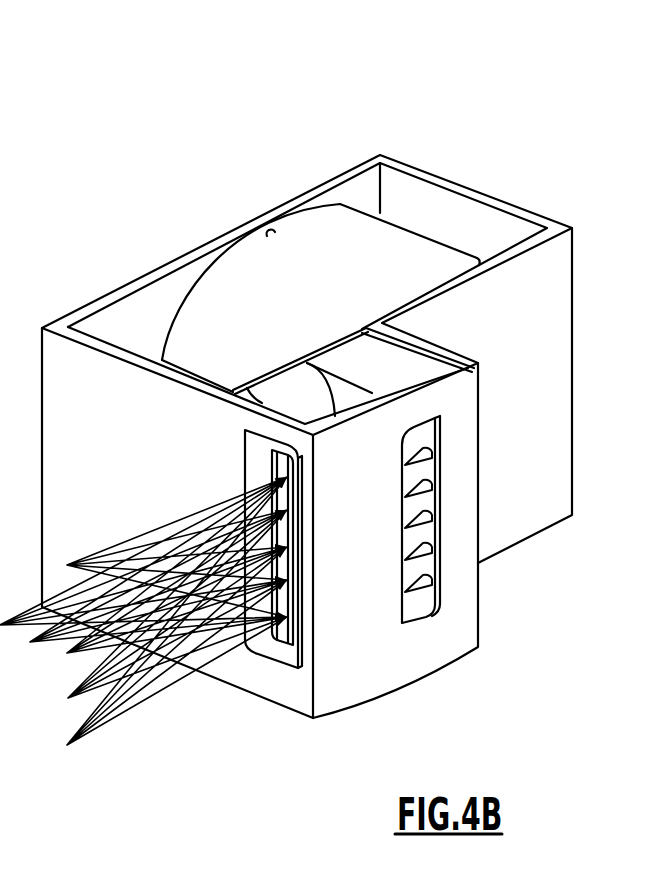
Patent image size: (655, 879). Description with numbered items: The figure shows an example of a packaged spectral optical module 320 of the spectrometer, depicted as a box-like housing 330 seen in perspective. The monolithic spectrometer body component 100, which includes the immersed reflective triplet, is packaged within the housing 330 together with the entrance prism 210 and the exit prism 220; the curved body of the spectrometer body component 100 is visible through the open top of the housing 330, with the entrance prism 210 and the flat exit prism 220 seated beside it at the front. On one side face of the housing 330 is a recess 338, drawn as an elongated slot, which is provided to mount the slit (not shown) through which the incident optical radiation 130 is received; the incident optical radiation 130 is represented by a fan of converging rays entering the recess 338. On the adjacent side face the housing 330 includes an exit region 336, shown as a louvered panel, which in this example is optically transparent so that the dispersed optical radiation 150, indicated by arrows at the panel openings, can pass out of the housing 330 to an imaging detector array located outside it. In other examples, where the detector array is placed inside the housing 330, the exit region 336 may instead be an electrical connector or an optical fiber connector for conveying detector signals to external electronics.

The packaged spectral optical module 320 is at (518, 117).
The housing 330 is at (538, 312).
The monolithic spectrometer body component 100 is at (308, 256).
The entrance prism 210 is at (298, 392).
The exit prism 220 is at (383, 364).
The dispersed optical radiation 150 is at (431, 497).
The exit region 336 is at (430, 624).
The recess 338 is at (263, 655).
The incident optical radiation 130 is at (157, 680).